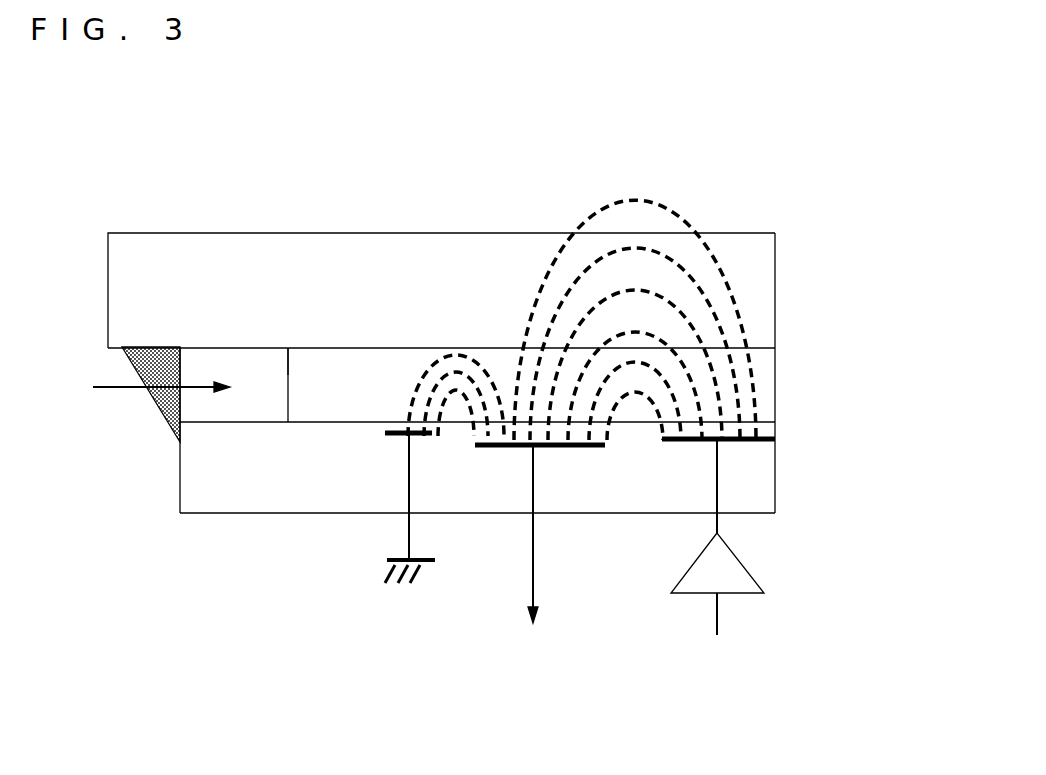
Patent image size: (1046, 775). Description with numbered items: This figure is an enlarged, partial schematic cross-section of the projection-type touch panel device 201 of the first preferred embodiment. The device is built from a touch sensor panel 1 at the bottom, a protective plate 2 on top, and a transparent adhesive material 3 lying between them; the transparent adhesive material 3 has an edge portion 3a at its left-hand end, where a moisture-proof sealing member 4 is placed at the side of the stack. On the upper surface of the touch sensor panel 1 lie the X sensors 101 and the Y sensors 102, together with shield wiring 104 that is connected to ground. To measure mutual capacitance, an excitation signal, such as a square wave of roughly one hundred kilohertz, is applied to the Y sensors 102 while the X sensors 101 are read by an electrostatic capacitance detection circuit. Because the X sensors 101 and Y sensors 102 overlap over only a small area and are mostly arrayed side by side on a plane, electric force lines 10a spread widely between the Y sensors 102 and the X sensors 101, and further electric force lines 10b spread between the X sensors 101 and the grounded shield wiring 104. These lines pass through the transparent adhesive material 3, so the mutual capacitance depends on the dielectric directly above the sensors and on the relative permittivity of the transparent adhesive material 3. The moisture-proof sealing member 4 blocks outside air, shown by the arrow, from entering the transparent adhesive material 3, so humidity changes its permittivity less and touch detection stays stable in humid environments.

The touch panel device 201 is at (110, 176).
The touch sensor panel 1 is at (180, 473).
The protective plate 2 is at (365, 233).
The transparent adhesive material 3 is at (322, 400).
The boundary of intermediate layer 3a is at (288, 375).
The moisture-proof sealing member 4 is at (152, 375).
The electric force lines 10a is at (655, 203).
The electric force lines 10b is at (438, 355).
The X sensors 101 is at (555, 448).
The Y sensors 102 is at (745, 443).
The shield wiring 104 is at (398, 442).